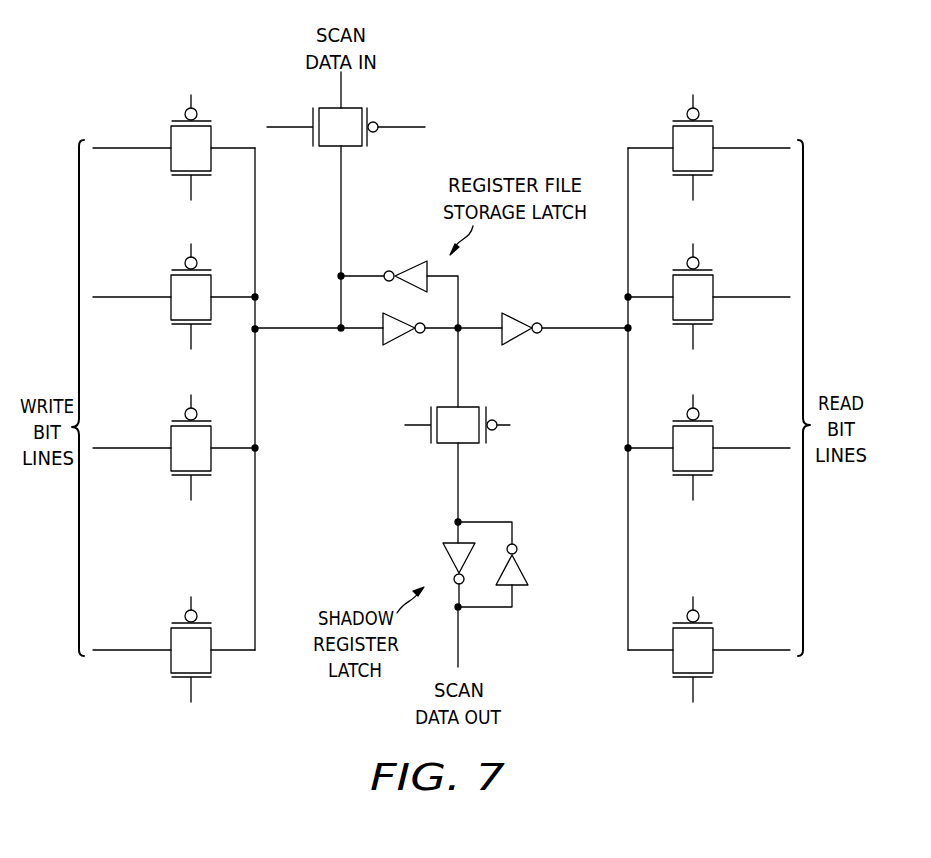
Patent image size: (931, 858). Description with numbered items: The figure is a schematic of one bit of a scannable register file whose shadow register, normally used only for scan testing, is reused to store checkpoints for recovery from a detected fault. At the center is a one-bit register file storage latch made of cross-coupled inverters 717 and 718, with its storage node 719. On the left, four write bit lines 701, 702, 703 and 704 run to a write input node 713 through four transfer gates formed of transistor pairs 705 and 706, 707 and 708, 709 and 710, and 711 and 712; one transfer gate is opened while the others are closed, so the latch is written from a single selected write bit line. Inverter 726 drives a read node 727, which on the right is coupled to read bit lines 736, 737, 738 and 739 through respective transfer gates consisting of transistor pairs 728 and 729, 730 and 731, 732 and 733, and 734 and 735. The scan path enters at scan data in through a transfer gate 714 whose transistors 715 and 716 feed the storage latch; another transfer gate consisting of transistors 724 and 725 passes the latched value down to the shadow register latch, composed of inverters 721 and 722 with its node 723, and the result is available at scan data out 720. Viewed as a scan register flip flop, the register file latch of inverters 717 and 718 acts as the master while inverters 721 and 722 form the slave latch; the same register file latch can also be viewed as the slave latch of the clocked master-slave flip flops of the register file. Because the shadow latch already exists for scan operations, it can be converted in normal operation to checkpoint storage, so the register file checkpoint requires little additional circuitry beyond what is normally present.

The write bit line 701 is at (133, 147).
The write bit line 702 is at (133, 296).
The write bit line 703 is at (133, 447).
The write bit line 704 is at (133, 649).
The transistor 705 is at (181, 119).
The transistor 706 is at (205, 177).
The transistor 707 is at (181, 268).
The transistor 708 is at (205, 326).
The transistor 709 is at (181, 419).
The transistor 710 is at (205, 477).
The transistor 711 is at (181, 621).
The transistor 712 is at (205, 679).
The write input node 713 is at (258, 295).
The scan data in transfer gate 714 is at (345, 95).
The scan data in 715 is at (312, 140).
The transistor 716 is at (370, 140).
The inverter 717 is at (410, 262).
The inverter 718 is at (405, 340).
The register file storage latch node 719 is at (462, 336).
The scan data out 720 is at (462, 612).
The inverter 721 is at (442, 558).
The inverter 722 is at (530, 567).
The shadow register latch node 723 is at (462, 518).
The transistor 724 is at (430, 437).
The transistor 725 is at (490, 413).
The inverter 726 is at (540, 296).
The read node 727 is at (620, 332).
The transistor 728 is at (702, 119).
The transistor 729 is at (680, 177).
The transistor 730 is at (702, 268).
The transistor 731 is at (680, 326).
The transistor 732 is at (702, 419).
The transistor 733 is at (680, 477).
The transistor 734 is at (702, 621).
The transistor 735 is at (680, 679).
The read bit line 736 is at (757, 147).
The read bit line 737 is at (757, 296).
The read bit line 738 is at (757, 447).
The read bit line 739 is at (757, 649).